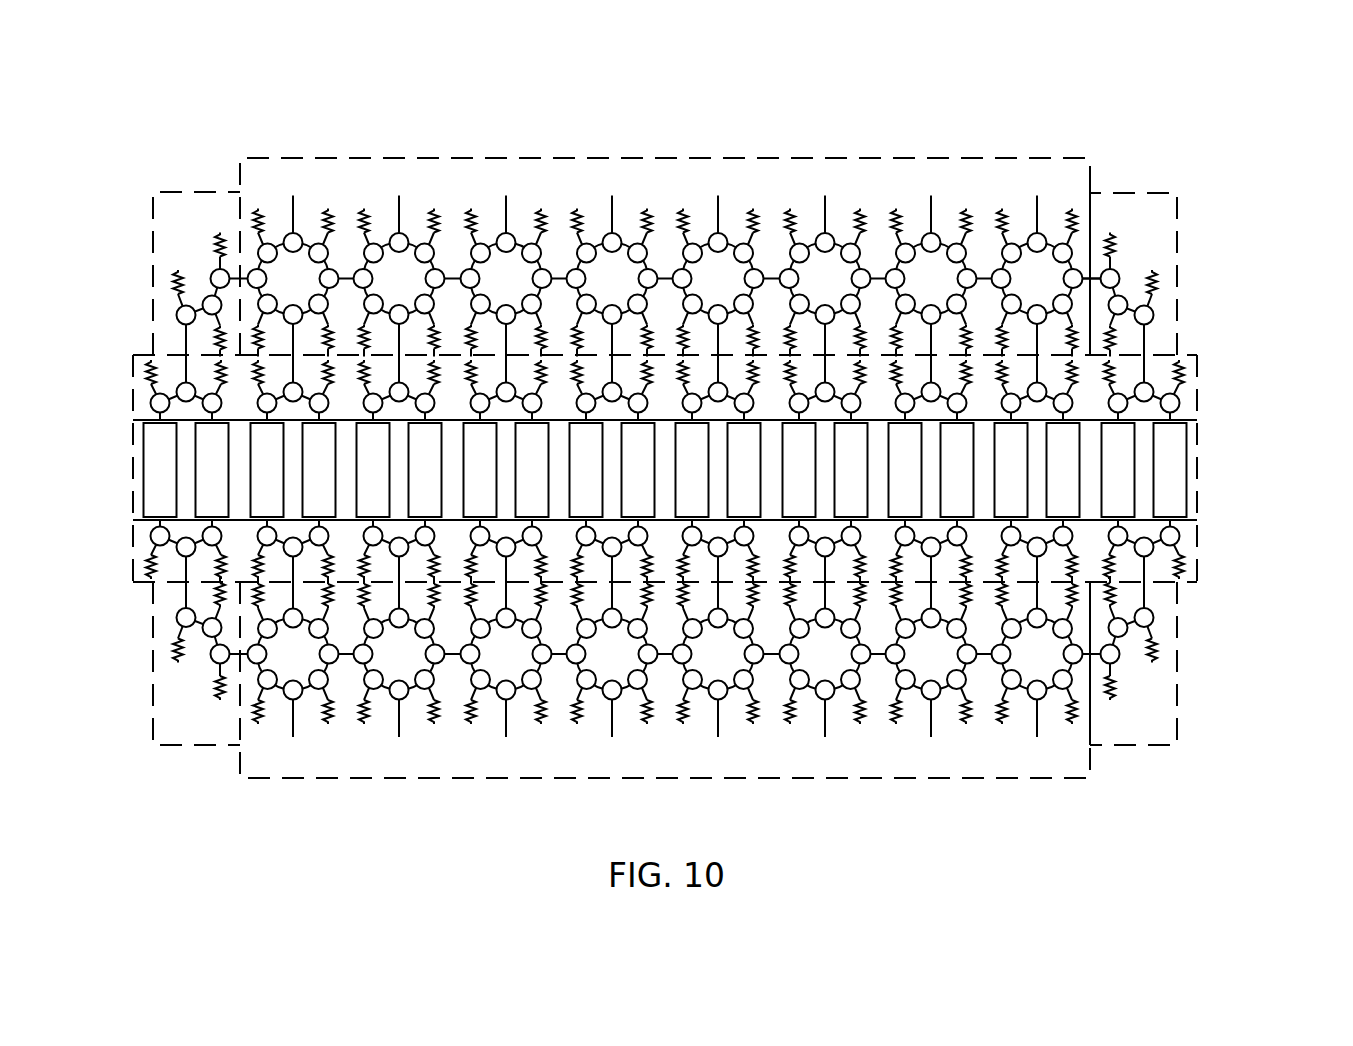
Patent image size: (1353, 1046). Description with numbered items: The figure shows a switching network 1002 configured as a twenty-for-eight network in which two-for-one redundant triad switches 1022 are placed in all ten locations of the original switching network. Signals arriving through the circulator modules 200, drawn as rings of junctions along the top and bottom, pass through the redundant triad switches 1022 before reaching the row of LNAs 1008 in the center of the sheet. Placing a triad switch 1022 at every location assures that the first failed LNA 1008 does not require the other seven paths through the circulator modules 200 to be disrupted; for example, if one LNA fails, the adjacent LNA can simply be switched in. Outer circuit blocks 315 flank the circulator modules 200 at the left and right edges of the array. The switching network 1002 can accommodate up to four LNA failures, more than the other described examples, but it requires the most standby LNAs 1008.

The switching network 1002 is at (1222, 106).
The circulator module 200 is at (665, 158).
The edge termination circuit 315 is at (197, 192).
The 2-for-1 redundant triad switch 1022 is at (1197, 388).
The LNA 1008 is at (1197, 468).